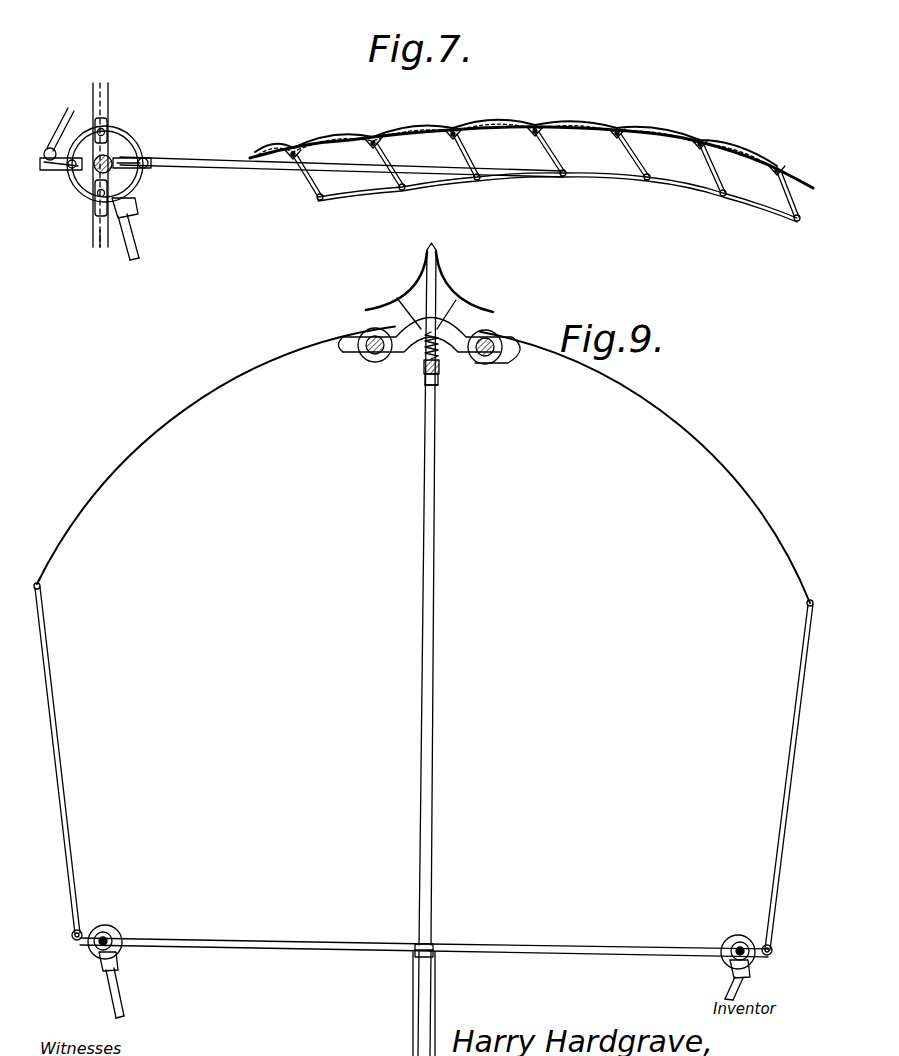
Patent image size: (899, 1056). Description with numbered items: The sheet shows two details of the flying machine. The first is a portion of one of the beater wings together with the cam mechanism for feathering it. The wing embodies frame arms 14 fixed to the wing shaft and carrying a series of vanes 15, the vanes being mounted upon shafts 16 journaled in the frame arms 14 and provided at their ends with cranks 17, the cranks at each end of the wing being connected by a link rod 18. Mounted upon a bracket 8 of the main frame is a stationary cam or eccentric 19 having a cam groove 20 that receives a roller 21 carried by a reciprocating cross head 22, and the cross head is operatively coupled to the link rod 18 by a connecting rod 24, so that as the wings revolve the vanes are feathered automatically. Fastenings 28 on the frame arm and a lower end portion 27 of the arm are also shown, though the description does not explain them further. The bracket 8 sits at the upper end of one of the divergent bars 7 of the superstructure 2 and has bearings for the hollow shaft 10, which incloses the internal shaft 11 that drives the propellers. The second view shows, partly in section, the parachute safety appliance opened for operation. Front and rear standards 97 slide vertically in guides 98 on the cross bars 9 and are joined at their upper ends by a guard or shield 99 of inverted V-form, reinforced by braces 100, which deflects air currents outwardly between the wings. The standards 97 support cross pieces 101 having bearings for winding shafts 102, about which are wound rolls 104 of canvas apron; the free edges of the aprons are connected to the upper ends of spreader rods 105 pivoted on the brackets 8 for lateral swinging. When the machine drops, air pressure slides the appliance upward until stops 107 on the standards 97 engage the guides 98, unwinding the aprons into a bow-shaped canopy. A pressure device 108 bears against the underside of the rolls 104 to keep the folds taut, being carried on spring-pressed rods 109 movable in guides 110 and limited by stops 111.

In FIG. 7, the frame arms 14 is at (108, 110).
In FIG. 7, the bolt 28 is at (113, 125).
In FIG. 7, the cam groove 20 is at (122, 147).
In FIG. 7, the roller 21 is at (143, 157).
In FIG. 7, the cross head 22 is at (165, 158).
In FIG. 7, the cam or eccentric 19 is at (148, 178).
In FIG. 9, the cam or eccentric 19 is at (108, 928).
In FIG. 7, the connecting rod 24 is at (250, 170).
In FIG. 7, the hollow shafts 10 is at (80, 178).
In FIG. 7, the internal shafts 11 is at (96, 200).
In FIG. 7, the bracket members 8 is at (128, 204).
In FIG. 9, the bracket members 8 is at (103, 962).
In FIG. 7, the bars 7 is at (133, 238).
In FIG. 9, the bars 7 is at (122, 997).
In FIG. 7, the pole end 27 is at (100, 245).
In FIG. 7, the spreaders or connecting devices 105 is at (66, 114).
In FIG. 9, the spreaders or connecting devices 105 is at (52, 688).
In FIG. 7, the vanes 15 is at (423, 125).
In FIG. 7, the shafts 16 is at (537, 120).
In FIG. 7, the cranks 17 is at (468, 152).
In FIG. 7, the link rod 18 is at (598, 178).
In FIG. 9, the braces 100 is at (418, 268).
In FIG. 9, the guard or shield 99 is at (478, 277).
In FIG. 9, the roll 104 is at (493, 332).
In FIG. 9, the cross pieces 101 is at (503, 363).
In FIG. 9, the winding shafts 102 is at (370, 352).
In FIG. 9, the pressure device 108 is at (417, 356).
In FIG. 9, the spring-pressed rods 109 is at (439, 375).
In FIG. 9, the guides 110 is at (420, 384).
In FIG. 9, the stops 111 is at (438, 388).
In FIG. 9, the standards 97 is at (424, 758).
In FIG. 9, the guides 98 is at (413, 1005).
In FIG. 9, the stops 107 is at (433, 945).
In FIG. 9, the superstructure 2 is at (310, 944).
In FIG. 9, the cross bars 9 is at (510, 945).